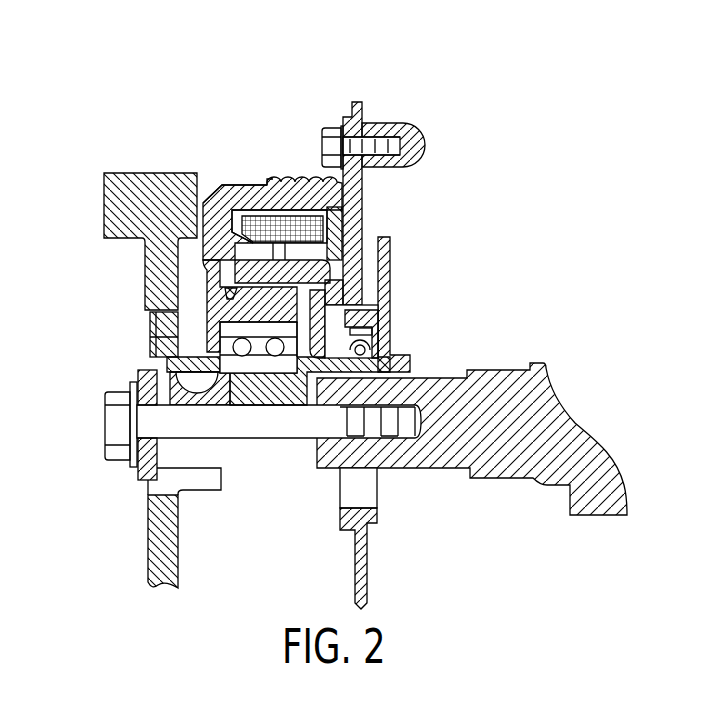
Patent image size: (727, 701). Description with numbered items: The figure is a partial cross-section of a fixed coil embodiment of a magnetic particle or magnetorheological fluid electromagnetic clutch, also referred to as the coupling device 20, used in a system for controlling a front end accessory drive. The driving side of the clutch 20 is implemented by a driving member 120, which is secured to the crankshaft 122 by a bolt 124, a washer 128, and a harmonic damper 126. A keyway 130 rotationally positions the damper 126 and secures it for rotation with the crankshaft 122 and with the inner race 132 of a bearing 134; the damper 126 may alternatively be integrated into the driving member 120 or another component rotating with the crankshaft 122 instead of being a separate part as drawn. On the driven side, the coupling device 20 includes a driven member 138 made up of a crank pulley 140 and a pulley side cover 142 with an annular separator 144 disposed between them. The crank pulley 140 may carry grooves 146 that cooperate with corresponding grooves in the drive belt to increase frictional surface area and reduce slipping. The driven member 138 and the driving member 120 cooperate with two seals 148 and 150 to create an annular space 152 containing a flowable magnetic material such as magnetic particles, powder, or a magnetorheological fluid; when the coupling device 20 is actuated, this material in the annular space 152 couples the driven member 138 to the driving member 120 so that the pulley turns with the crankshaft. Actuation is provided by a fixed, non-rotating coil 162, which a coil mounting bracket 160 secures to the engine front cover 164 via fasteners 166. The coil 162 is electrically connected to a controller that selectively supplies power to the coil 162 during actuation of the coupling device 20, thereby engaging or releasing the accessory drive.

The clutch 20 is at (224, 135).
The driving member 120 is at (328, 338).
The crankshaft 122 is at (496, 470).
The bolt 124 is at (105, 423).
The harmonic damper 126 is at (112, 193).
The washer 128 is at (137, 377).
The keyway 130 is at (178, 375).
The inner race 132 is at (182, 343).
The bearing 134 is at (218, 330).
The driven member 138 is at (222, 185).
The crank pulley 140 is at (275, 178).
The pulley side cover 142 is at (346, 298).
The annular separator 144 is at (332, 242).
The grooves 146 is at (298, 165).
The seal 148 is at (232, 292).
The seal 150 is at (337, 291).
The annular space 152 is at (331, 273).
The coil mounting bracket 160 is at (346, 220).
The coil 162 is at (302, 222).
The engine front cover 164 is at (385, 130).
The fasteners 166 is at (334, 137).